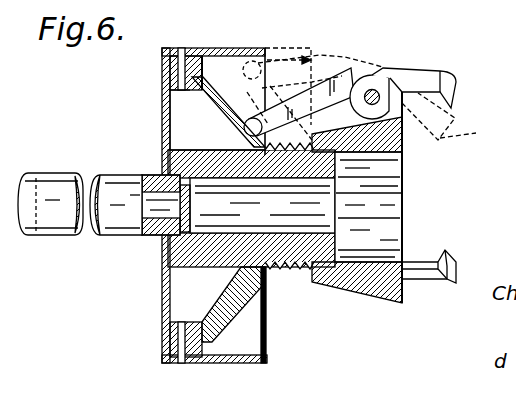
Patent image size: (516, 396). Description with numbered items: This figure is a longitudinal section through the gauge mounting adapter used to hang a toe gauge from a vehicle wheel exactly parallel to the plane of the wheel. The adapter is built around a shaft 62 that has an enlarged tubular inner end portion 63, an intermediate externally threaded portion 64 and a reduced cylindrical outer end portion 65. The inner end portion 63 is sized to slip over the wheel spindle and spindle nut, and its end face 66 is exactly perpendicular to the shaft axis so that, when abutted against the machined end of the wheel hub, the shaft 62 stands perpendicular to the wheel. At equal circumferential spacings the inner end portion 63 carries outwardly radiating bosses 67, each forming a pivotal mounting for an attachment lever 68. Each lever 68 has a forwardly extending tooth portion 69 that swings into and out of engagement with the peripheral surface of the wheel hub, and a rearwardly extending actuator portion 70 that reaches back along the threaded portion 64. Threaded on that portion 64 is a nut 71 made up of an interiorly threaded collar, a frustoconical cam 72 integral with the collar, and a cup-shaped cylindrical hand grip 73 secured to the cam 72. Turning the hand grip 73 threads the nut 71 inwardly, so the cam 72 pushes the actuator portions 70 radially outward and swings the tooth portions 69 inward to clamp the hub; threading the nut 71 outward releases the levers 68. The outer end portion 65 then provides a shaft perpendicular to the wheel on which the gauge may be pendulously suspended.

The shaft 62 is at (125, 240).
The enlarged tubular inner end portion 63 is at (350, 282).
The intermediate externally threaded portion 64 is at (280, 257).
The reduced cylindrical outer end portion 65 is at (38, 237).
The end face 66 is at (404, 148).
The boss 67 is at (403, 110).
The attachment lever 68 is at (365, 69).
The tooth portion 69 is at (453, 104).
The actuator portion 70 is at (249, 121).
The nut 71 is at (183, 150).
The frustoconical cam 72 is at (221, 107).
The cup-shaped cylindrical hand grip 73 is at (206, 50).